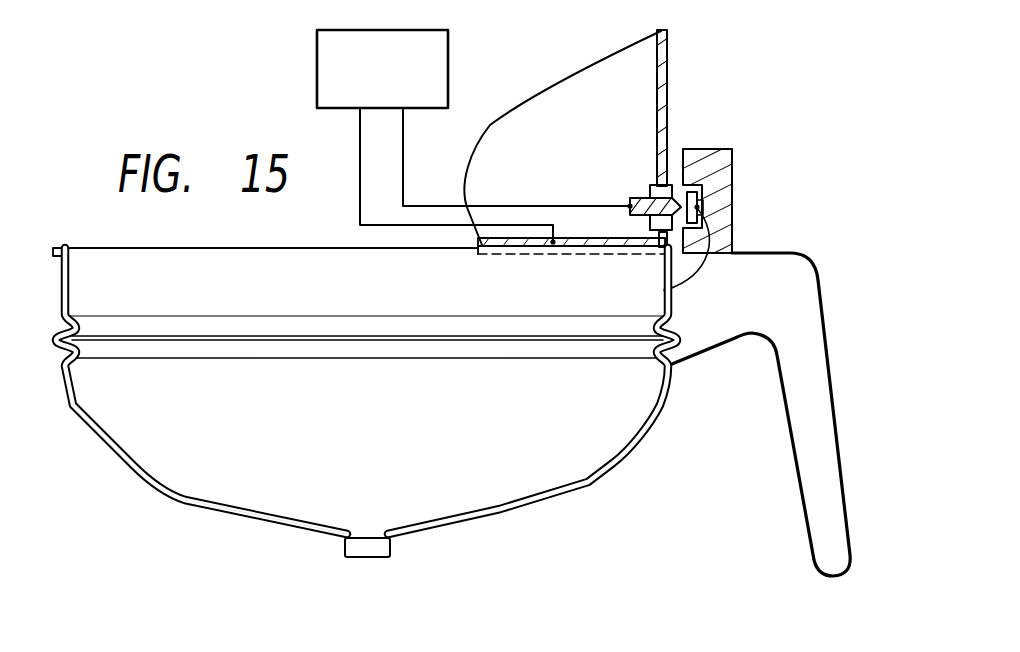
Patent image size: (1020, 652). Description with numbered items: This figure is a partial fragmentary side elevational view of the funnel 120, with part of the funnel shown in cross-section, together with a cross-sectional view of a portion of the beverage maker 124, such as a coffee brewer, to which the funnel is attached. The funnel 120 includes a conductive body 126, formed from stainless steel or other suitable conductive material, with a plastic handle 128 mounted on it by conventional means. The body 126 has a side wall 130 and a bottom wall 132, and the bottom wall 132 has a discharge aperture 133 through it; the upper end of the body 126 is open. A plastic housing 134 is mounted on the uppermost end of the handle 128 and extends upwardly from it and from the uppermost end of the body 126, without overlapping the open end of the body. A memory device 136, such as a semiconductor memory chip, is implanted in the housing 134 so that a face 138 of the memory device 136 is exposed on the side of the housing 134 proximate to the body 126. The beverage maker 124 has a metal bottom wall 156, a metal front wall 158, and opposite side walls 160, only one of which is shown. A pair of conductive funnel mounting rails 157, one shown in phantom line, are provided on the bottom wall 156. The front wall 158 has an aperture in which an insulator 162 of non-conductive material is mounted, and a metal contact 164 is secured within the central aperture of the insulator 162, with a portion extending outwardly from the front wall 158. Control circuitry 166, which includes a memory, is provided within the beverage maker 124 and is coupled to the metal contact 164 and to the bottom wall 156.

The funnel 120 is at (402, 391).
The beverage maker 124 is at (668, 124).
The conductive body 126 is at (402, 391).
The plastic handle 128 is at (802, 377).
The side wall 130 is at (658, 415).
The bottom wall 132 is at (495, 515).
The discharge aperture 133 is at (372, 560).
The plastic housing 134 is at (708, 267).
The memory device 136 is at (732, 167).
The face of the memory device 138 is at (648, 188).
The metal bottom wall 156 is at (518, 240).
The conductive funnel mounting rails 157 is at (572, 258).
The metal front wall 158 is at (657, 48).
The side wall 160 is at (485, 166).
The insulator 162 is at (612, 180).
The metal contact 164 is at (646, 194).
The control circuitry 166 is at (317, 68).